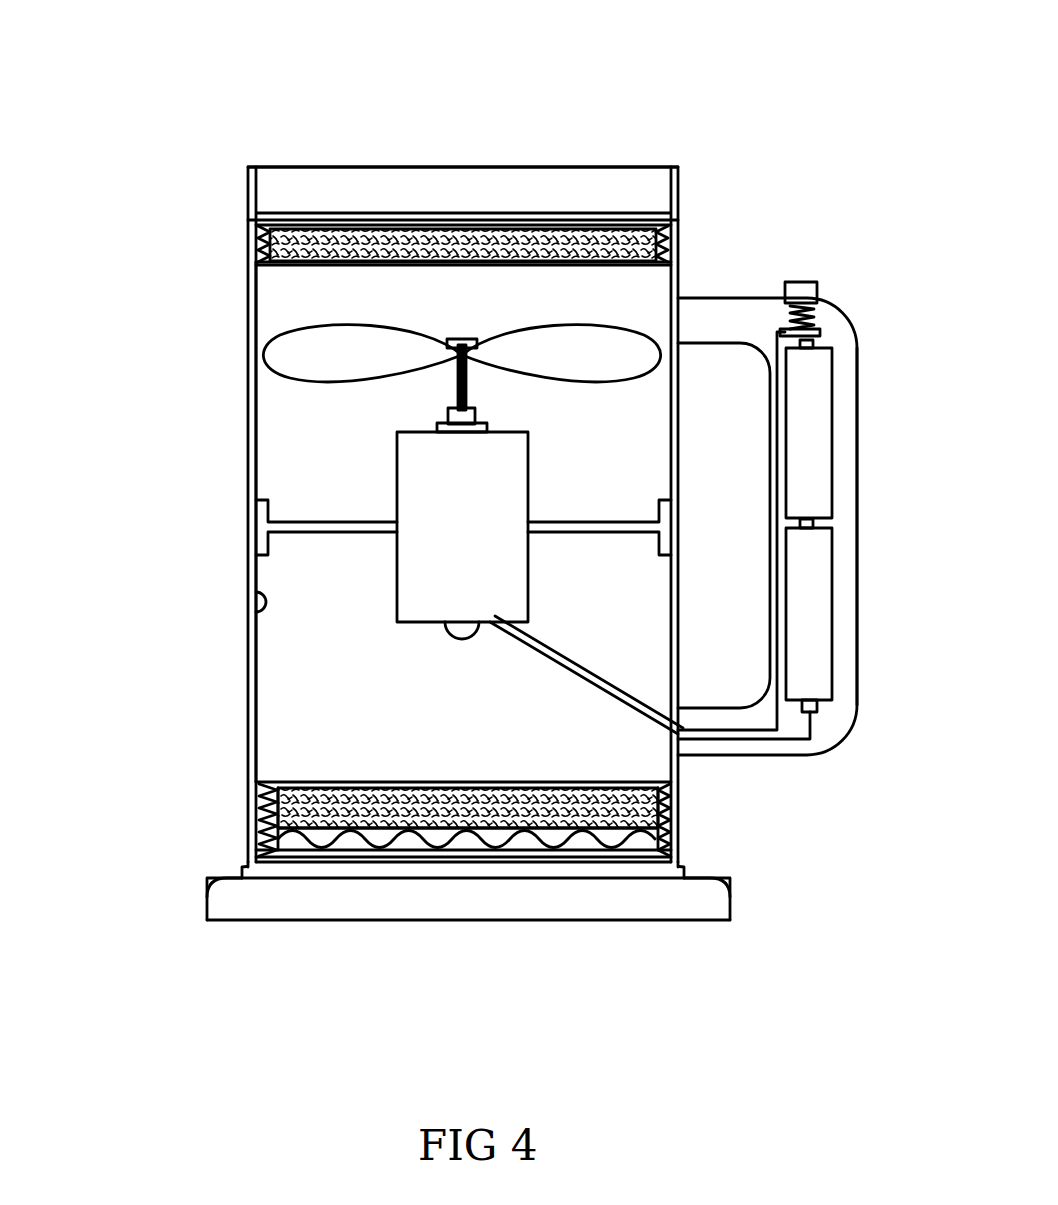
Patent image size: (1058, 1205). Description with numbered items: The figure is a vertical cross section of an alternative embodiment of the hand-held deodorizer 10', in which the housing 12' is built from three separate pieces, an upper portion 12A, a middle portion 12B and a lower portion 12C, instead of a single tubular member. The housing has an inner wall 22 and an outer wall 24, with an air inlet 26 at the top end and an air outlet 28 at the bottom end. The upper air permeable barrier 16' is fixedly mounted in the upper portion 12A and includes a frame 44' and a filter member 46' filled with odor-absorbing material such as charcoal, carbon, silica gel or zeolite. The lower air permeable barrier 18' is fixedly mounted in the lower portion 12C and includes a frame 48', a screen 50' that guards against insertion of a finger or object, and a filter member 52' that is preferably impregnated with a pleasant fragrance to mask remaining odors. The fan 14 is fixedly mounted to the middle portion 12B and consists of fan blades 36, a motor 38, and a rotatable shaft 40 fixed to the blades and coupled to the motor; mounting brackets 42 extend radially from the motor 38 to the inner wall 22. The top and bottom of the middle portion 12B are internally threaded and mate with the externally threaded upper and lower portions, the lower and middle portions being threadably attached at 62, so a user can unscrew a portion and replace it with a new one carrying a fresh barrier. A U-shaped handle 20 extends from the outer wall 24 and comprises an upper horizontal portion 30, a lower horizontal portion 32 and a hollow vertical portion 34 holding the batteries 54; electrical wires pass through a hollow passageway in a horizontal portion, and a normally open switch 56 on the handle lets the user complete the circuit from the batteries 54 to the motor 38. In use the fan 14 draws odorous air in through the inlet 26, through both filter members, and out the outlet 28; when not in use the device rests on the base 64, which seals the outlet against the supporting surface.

The deodorizer 10' is at (109, 55).
The housing 12' is at (209, 541).
The upper portion 12A is at (678, 186).
The middle portion 12B is at (678, 463).
The lower portion 12C is at (730, 900).
The fan 14 is at (397, 577).
The upper air permeable barrier 16' is at (421, 244).
The lower air permeable barrier 18' is at (415, 820).
The handle 20 is at (845, 508).
The inner wall 22 is at (256, 600).
The outer wall 24 is at (256, 672).
The air inlet 26 is at (452, 167).
The air outlet 28 is at (450, 921).
The upper horizontal portion 30 is at (718, 312).
The lower horizontal portion 32 is at (800, 753).
The vertical portion 34 is at (843, 656).
The fan blades 36 is at (582, 370).
The motor 38 is at (397, 465).
The rotatable shaft 40 is at (455, 383).
The mounting brackets 42 is at (585, 530).
The frame 44' is at (420, 205).
The filter member 46' is at (419, 296).
The frame 48' is at (421, 767).
The screen 50' is at (408, 853).
The filter member 52' is at (362, 842).
The batteries 54 is at (813, 421).
The switch 56 is at (800, 282).
The threaded attachment 62 is at (680, 810).
The base 64 is at (222, 893).